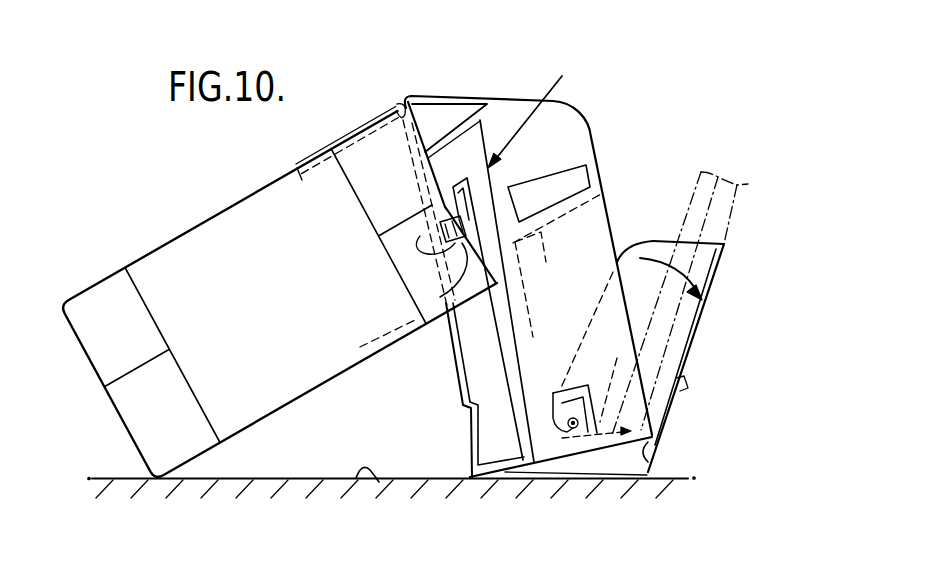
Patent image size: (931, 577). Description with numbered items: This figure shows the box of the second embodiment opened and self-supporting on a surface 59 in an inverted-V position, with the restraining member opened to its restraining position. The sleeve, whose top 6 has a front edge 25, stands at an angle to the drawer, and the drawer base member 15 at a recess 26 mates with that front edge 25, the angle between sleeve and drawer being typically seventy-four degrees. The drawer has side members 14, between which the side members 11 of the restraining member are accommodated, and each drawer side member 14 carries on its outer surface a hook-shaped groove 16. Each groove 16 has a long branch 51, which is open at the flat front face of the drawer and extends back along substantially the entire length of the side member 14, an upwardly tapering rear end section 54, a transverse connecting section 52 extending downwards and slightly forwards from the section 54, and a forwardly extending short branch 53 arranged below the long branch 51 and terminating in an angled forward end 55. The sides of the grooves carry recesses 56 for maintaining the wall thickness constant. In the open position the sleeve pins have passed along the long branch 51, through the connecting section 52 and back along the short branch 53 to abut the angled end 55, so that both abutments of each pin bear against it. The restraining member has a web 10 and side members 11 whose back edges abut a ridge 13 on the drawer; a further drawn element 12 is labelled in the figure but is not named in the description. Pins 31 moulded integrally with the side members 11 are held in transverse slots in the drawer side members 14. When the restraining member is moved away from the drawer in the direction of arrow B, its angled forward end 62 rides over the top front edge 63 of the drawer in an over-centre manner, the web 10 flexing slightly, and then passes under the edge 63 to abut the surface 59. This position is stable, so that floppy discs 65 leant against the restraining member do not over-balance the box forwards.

The top of the sleeve 6 is at (298, 174).
The front edge of the sleeve top member 25 is at (397, 121).
The recess 26 is at (402, 112).
The side members 14 is at (664, 99).
The recesses 56 is at (430, 120).
The transverse connecting section 52 is at (453, 158).
The upwardly tapering rear end sections 54 is at (485, 172).
The grooves 16 is at (594, 56).
The side members of the restraining member 11 is at (655, 250).
The floppy discs 65 is at (690, 208).
The web 10 is at (761, 304).
The arrow B is at (669, 279).
The short branch 53 is at (384, 240).
The forward end of the short branches 55 is at (447, 285).
The ridge 13 is at (587, 252).
The wall 12 is at (584, 309).
The base member 15 is at (455, 354).
The surface 59 is at (379, 482).
The long branch 51 is at (536, 452).
The pins 31 is at (575, 428).
The top front edge of the drawer 63 is at (645, 446).
The forward end 62 is at (648, 473).